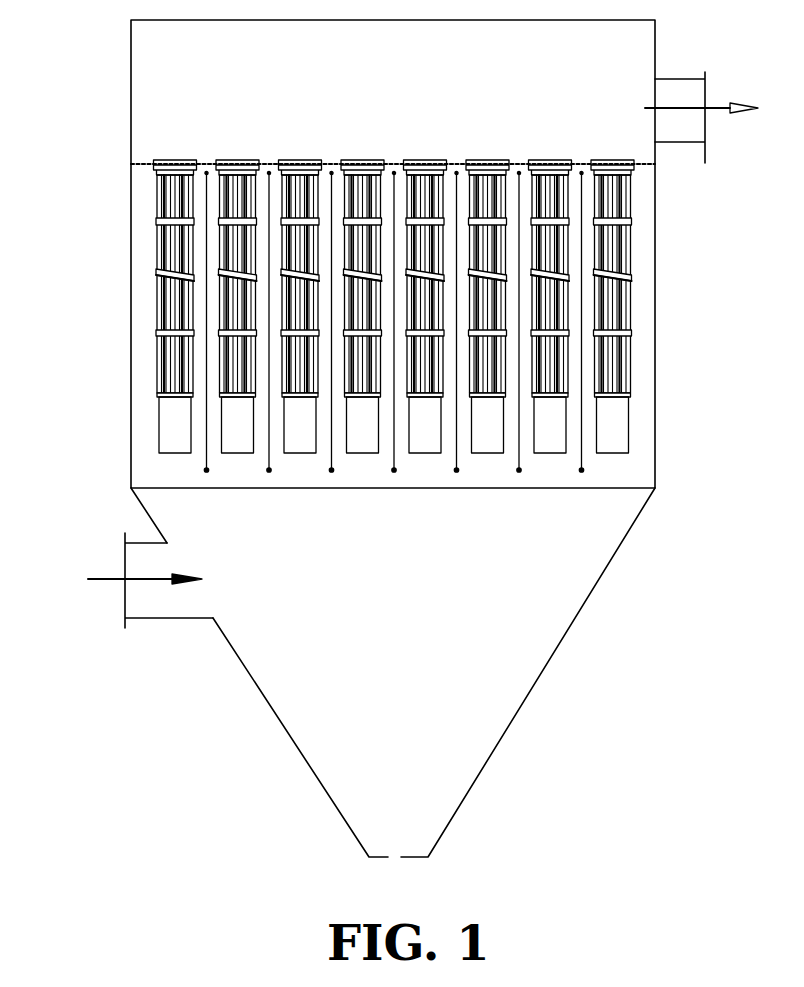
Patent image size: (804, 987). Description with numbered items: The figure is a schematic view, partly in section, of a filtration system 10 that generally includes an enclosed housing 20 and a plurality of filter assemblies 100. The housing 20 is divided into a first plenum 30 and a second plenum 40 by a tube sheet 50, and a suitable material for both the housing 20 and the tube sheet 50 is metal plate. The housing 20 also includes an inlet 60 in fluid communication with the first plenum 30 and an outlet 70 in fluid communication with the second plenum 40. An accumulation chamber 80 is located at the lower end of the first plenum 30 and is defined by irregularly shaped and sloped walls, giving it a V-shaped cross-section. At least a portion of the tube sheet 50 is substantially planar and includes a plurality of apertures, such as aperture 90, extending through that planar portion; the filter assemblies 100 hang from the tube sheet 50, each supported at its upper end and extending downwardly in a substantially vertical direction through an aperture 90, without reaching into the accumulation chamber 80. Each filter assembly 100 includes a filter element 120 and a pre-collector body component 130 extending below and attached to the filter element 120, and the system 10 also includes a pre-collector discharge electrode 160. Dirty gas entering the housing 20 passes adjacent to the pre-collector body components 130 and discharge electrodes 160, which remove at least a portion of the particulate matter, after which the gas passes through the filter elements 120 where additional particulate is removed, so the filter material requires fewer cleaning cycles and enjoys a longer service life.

The filtration system 10 is at (705, 459).
The housing 20 is at (657, 488).
The first plenum 30 is at (442, 483).
The second plenum 40 is at (510, 127).
The tube sheet 50 is at (647, 165).
The inlet 60 is at (183, 620).
The outlet 70 is at (680, 78).
The accumulation chamber 80 is at (537, 566).
The aperture 90 is at (430, 143).
The filter assembly 100 is at (106, 306).
The filter element 120 is at (158, 310).
The pre-collector body component 130 is at (162, 413).
The pre-collector discharge electrode 160 is at (208, 463).